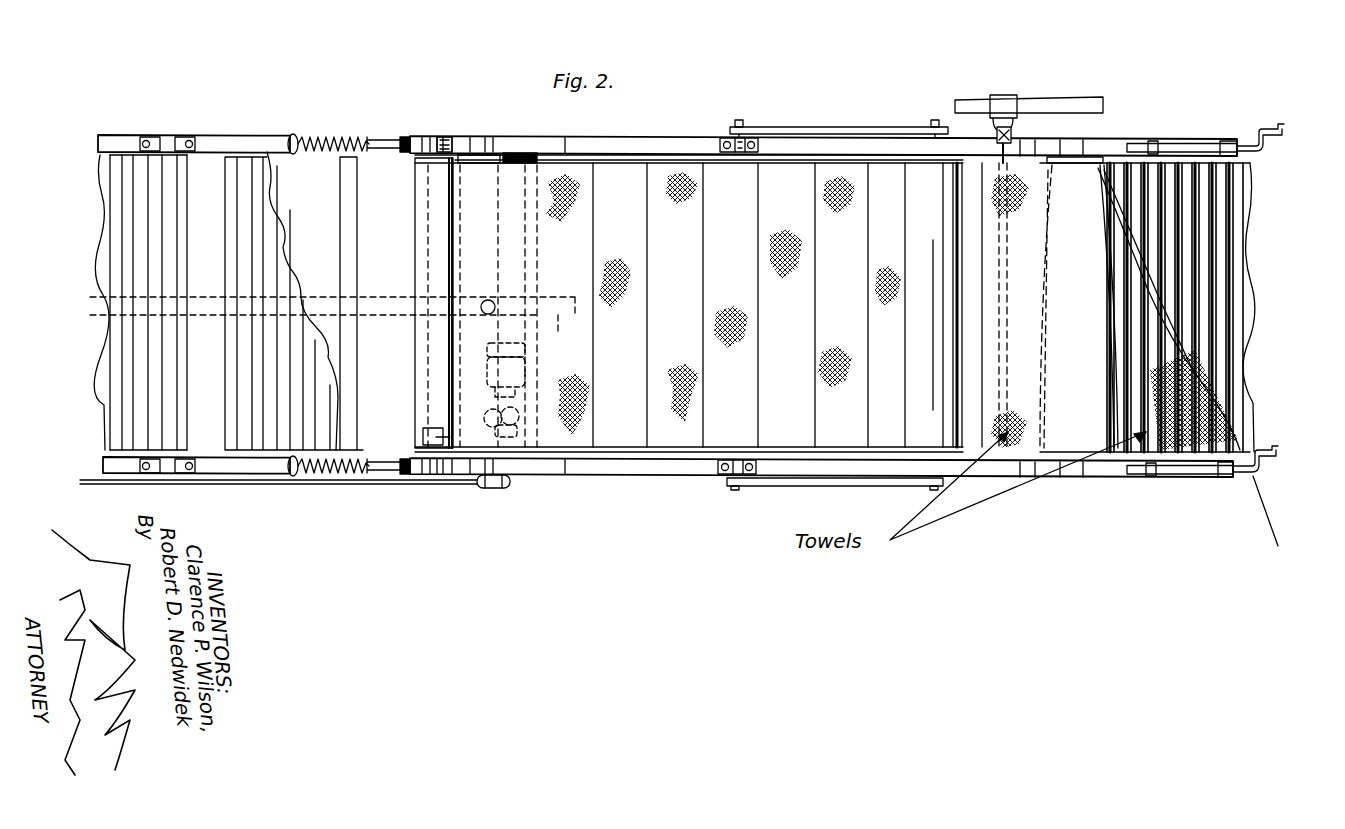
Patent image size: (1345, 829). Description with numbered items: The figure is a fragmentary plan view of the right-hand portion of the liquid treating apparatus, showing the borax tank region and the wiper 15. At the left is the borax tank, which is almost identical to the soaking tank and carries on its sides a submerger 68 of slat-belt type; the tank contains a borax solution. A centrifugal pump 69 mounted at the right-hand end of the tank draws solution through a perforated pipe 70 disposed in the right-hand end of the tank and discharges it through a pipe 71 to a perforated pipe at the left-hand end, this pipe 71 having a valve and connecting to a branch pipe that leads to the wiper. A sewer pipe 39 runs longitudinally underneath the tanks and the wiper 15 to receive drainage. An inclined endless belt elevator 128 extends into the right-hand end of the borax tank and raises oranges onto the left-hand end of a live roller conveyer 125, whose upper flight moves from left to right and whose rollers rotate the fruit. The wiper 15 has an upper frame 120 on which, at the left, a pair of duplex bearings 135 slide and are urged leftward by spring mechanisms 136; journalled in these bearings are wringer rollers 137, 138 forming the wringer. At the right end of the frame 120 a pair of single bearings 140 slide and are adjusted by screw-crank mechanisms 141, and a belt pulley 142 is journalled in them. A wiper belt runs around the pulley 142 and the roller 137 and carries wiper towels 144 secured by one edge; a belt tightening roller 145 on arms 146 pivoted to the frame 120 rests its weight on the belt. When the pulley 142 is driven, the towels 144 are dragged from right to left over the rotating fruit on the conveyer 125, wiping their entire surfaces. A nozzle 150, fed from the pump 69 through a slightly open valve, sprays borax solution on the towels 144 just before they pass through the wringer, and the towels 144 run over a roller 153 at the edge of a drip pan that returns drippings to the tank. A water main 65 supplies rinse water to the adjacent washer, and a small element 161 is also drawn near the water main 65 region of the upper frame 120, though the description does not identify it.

The wiper 15 is at (777, 127).
The sewer pipe 39 is at (526, 390).
The water main 65 is at (1090, 106).
The submerger 68 is at (125, 168).
The centrifugal pump 69 is at (528, 476).
The perforated pipe 70 is at (425, 372).
The pipe 71 is at (385, 478).
The upper frame 120 is at (1200, 142).
The live roller conveyer 125 is at (1205, 222).
The inclined endless belt elevator 128 is at (268, 252).
The duplex bearings 135 is at (442, 153).
The spring mechanisms 136 is at (322, 136).
The wringer roller 137 is at (486, 158).
The wringer roller 138 is at (446, 158).
The single bearings 140 is at (1156, 141).
The screw-crank mechanisms 141 is at (1273, 126).
The belt pulley 142 is at (1086, 164).
The wiper towels 144 is at (712, 198).
The belt tightening roller 145 is at (920, 175).
The arms 146 is at (846, 126).
The nozzle 150 is at (520, 298).
The roller 153 is at (540, 160).
The switch 161 is at (1006, 136).